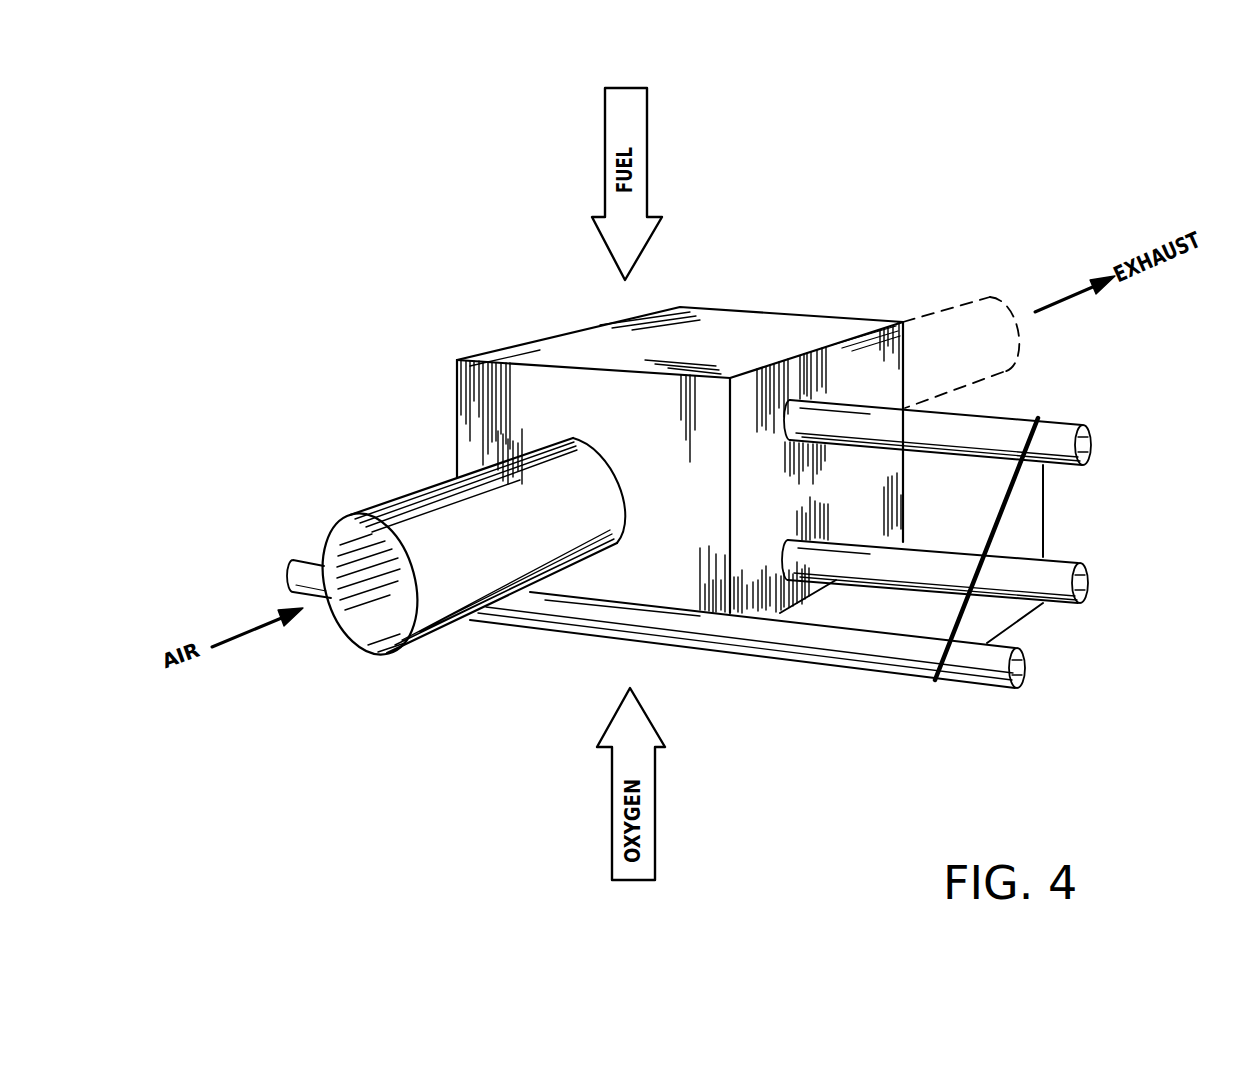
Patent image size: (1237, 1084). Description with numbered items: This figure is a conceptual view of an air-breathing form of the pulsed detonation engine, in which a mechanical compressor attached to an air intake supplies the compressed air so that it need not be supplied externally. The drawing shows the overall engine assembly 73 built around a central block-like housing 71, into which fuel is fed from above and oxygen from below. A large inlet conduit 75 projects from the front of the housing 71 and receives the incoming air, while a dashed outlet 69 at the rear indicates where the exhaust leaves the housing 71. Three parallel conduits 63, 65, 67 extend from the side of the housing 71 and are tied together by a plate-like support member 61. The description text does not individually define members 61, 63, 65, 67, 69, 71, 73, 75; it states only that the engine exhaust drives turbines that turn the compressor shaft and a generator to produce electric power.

The support plate 61 is at (1045, 512).
The first conduit 63 is at (1060, 416).
The second conduit 65 is at (1063, 603).
The third conduit 67 is at (977, 689).
The exhaust outlet 69 is at (990, 313).
The housing 71 is at (512, 358).
The combustor assembly 73 is at (530, 699).
The air inlet conduit 75 is at (388, 510).